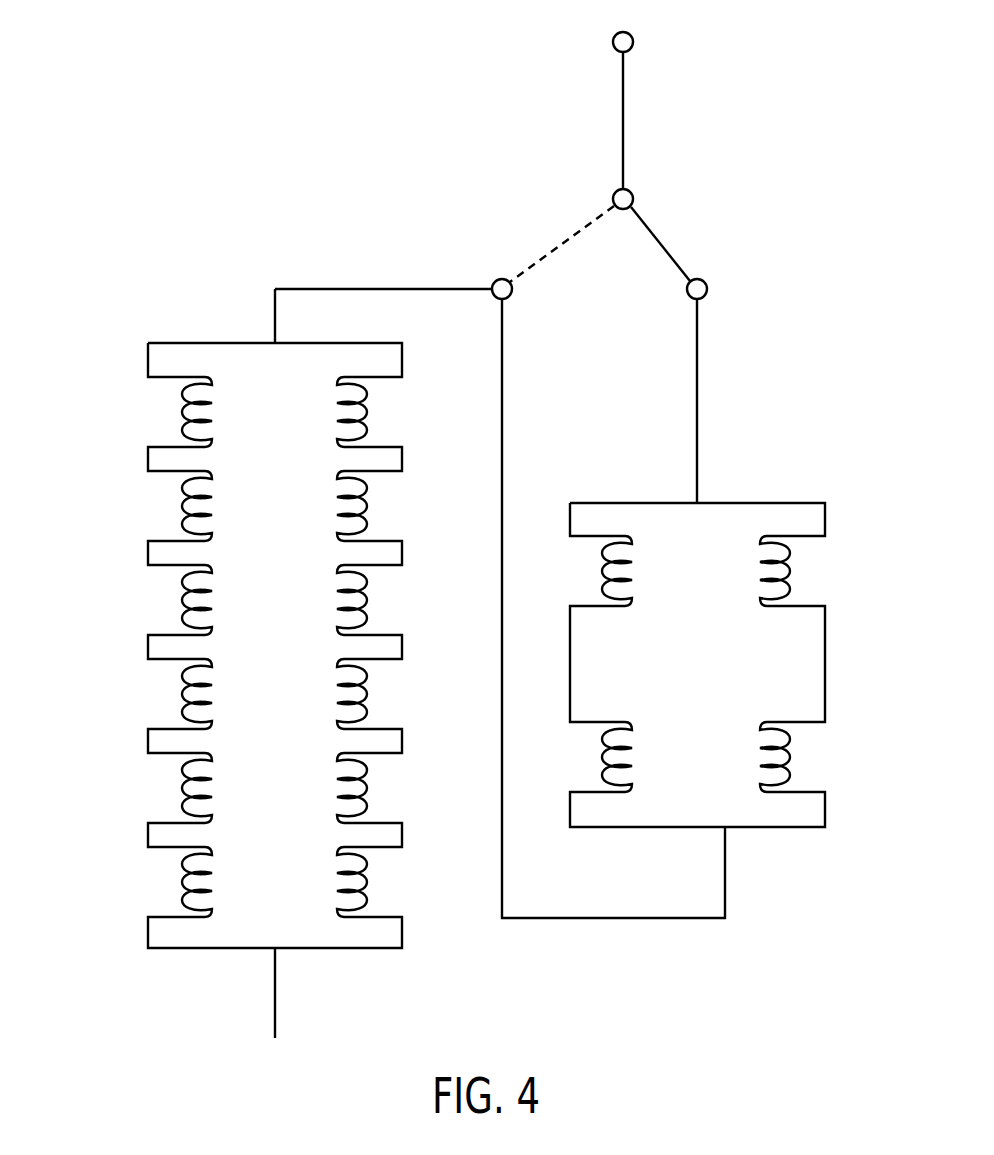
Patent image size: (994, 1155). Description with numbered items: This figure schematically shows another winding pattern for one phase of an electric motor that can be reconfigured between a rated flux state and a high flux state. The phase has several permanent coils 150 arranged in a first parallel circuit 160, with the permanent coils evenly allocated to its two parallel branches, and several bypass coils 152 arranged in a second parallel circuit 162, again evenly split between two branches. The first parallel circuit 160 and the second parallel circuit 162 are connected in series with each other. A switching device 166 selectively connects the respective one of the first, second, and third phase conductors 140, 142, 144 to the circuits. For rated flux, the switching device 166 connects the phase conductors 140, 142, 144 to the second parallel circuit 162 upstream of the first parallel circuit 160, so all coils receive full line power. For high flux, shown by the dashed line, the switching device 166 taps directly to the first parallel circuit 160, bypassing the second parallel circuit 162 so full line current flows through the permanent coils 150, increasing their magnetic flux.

The first phase conductor 140 is at (706, 97).
The second phase conductor 142 is at (623, 42).
The third phase conductor 144 is at (633, 40).
The switching device 166 is at (633, 197).
The first parallel circuit 160 is at (227, 628).
The permanent coils 150 is at (209, 647).
The second parallel circuit 162 is at (746, 608).
The bypass coils 152 is at (762, 649).